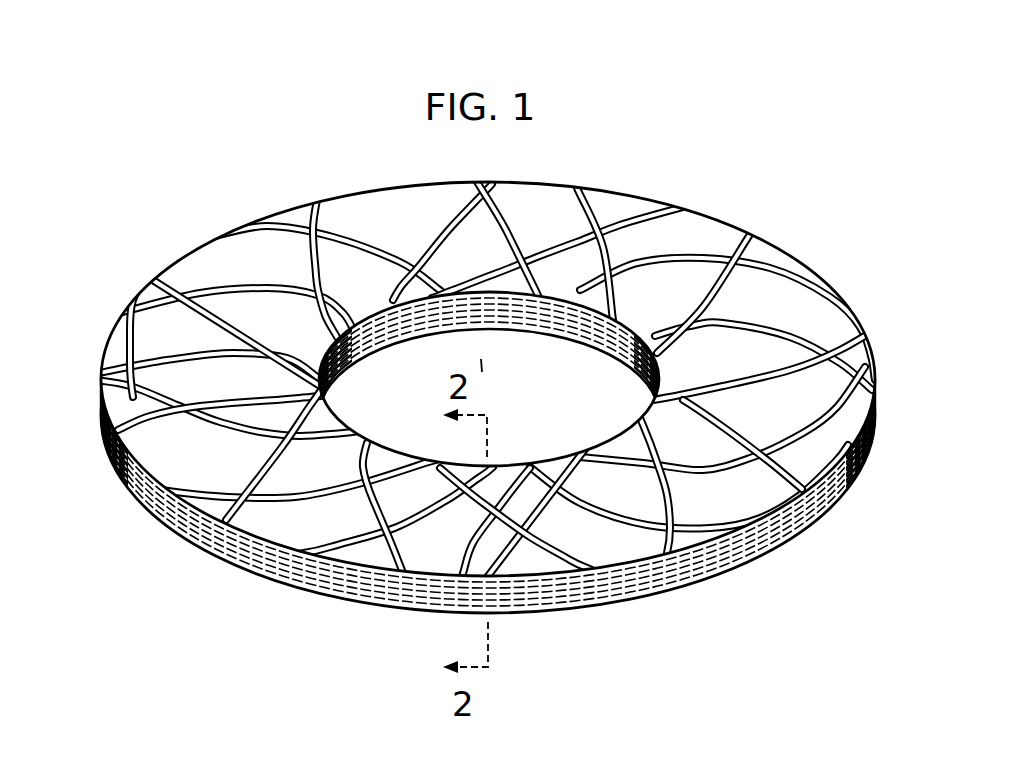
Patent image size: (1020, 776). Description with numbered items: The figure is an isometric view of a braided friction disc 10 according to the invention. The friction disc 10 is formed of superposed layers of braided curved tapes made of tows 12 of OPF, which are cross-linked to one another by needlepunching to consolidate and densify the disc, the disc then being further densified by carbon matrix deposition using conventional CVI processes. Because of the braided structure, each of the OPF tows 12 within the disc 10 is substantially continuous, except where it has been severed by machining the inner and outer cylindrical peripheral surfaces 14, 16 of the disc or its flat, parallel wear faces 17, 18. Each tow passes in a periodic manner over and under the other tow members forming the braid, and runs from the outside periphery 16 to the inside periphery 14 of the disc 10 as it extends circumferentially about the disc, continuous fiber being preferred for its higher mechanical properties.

The friction disc 10 is at (220, 196).
The tows 12 is at (124, 304).
The inner cylindrical peripheral surface 14 is at (582, 343).
The outer cylindrical peripheral surface 16 is at (153, 497).
The wear face 17 is at (822, 310).
The wear face 18 is at (667, 578).